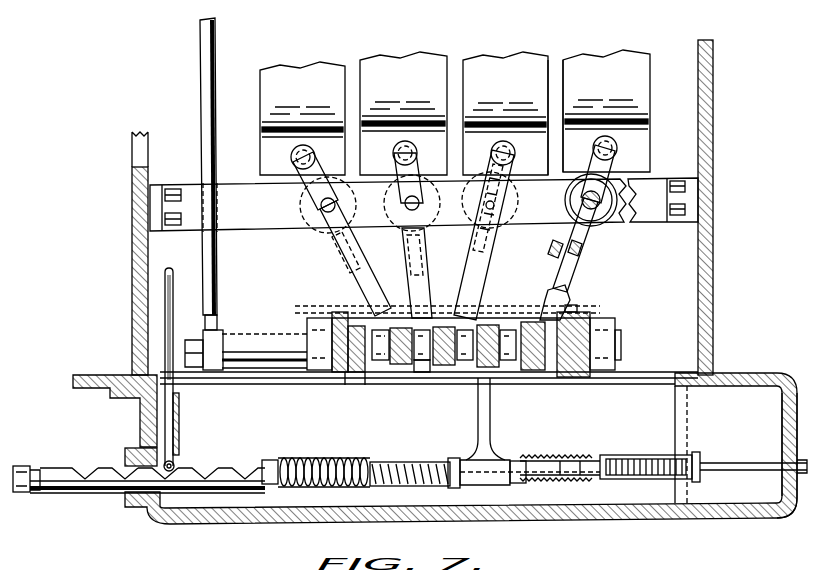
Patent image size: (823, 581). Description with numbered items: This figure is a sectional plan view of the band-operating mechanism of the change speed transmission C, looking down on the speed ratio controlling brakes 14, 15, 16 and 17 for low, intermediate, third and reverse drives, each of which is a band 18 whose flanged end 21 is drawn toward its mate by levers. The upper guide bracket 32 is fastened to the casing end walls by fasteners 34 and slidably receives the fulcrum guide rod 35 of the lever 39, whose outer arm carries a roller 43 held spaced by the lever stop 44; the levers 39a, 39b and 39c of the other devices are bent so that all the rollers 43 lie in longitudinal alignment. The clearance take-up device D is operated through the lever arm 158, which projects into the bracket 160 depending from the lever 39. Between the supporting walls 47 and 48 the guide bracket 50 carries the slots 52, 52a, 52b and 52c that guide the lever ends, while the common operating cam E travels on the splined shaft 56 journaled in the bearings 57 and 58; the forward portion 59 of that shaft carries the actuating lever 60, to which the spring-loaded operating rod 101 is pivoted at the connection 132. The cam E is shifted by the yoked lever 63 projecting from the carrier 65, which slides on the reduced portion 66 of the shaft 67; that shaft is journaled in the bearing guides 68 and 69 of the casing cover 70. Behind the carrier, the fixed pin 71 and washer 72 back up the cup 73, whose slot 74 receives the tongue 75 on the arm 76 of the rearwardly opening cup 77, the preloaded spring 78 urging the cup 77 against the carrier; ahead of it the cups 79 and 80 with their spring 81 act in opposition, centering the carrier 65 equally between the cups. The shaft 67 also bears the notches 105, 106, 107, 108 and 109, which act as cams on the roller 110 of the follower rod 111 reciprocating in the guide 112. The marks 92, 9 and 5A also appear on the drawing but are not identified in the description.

The change speed transmission C is at (713, 126).
The casing cover 70 is at (240, 523).
The bearing guide 69 is at (800, 473).
The reduced portion of the shaft 66 is at (736, 462).
The bearing guide 68 is at (125, 462).
The upper guide bracket 32 is at (245, 231).
The fasteners 34 is at (178, 189).
The operating shaft 101 is at (217, 147).
The pivotal connection 132 is at (222, 314).
The actuating lever 60 is at (224, 321).
The forwardly extending portion of the splined shaft 59 is at (255, 342).
The speed ratio controlling brake 16 is at (303, 78).
The speed ratio controlling brake 15 is at (412, 68).
The speed ratio controlling brake 14 is at (510, 68).
The speed ratio controlling brake 17 is at (618, 70).
The outer band 18 is at (570, 72).
The clearance take-up device D is at (347, 173).
The fulcrum guide rod 35 is at (408, 203).
The actuating flange 21 is at (480, 143).
The actuating lever 39b is at (369, 238).
The lever arm 158 is at (333, 248).
The actuating lever 39a is at (424, 273).
The lever 39 is at (478, 288).
The section line 9 is at (591, 220).
The bracket 160 is at (553, 250).
The lever stops 44 is at (566, 300).
The slot 52c is at (543, 271).
The adjustable operating element E is at (448, 378).
The bearing 57 is at (307, 318).
The supporting wall 47 is at (345, 312).
The guide bracket 50 is at (353, 378).
The rollers 43 is at (382, 328).
The slot 52b is at (388, 375).
The slot 52a is at (418, 375).
The slot 52 is at (435, 325).
The cam disc 5A is at (482, 325).
The splined shaft 56 is at (508, 328).
The bearing 58 is at (602, 316).
The actuating lever 39c is at (580, 310).
The supporting wall 48 is at (615, 337).
The follower rod 111 is at (176, 400).
The guide 112 is at (180, 421).
The notch 105 is at (180, 490).
The shaft end 92 is at (22, 465).
The notch 108 is at (85, 466).
The notch 109 is at (98, 466).
The roller 110 is at (178, 464).
The notch 106 is at (212, 466).
The notch 107 is at (260, 460).
The shaft 67 is at (275, 458).
The cup 79 is at (312, 458).
The preloaded coil spring 81 is at (420, 460).
The cup 80 is at (456, 458).
The carrier 65 is at (512, 458).
The yoked lever 63 is at (491, 405).
The cup 77 is at (527, 482).
The arm 76 is at (545, 482).
The preloaded coil spring 78 is at (577, 482).
The cup 73 is at (645, 457).
The tongue 75 is at (602, 480).
The slot 74 is at (636, 480).
The washer 72 is at (698, 458).
The fixed pin 71 is at (706, 462).